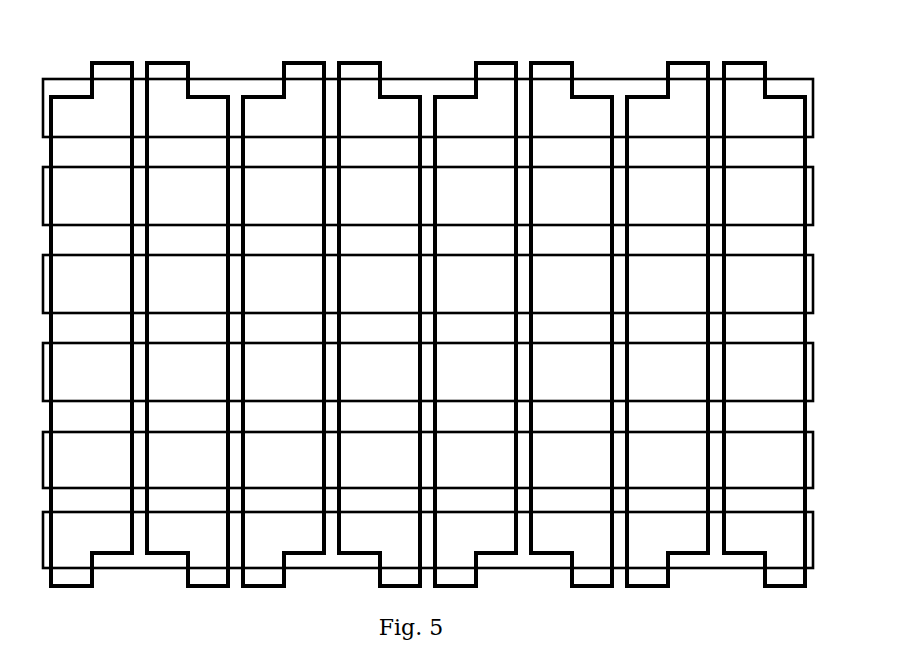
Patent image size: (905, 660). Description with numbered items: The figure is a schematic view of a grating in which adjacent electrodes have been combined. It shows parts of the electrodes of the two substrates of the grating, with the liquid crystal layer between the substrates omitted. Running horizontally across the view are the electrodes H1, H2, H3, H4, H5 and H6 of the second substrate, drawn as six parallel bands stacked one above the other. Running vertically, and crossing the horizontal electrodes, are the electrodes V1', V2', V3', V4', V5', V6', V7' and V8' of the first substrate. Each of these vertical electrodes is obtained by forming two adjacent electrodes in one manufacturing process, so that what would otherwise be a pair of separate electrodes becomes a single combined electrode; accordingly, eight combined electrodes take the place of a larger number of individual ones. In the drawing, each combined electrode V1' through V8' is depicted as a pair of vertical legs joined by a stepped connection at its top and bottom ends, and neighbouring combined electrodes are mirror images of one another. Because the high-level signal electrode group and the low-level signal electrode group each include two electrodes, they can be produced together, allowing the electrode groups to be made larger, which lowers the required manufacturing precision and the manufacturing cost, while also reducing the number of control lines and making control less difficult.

The electrode of the second substrate H1 is at (447, 108).
The electrode of the second substrate H2 is at (447, 196).
The electrode of the second substrate H3 is at (447, 284).
The electrode of the second substrate H4 is at (447, 372).
The electrode of the second substrate H5 is at (447, 460).
The electrode of the second substrate H6 is at (447, 540).
The combined electrode V1' is at (91, 302).
The combined electrode V2' is at (187, 302).
The combined electrode V3' is at (283, 302).
The combined electrode V4' is at (379, 302).
The combined electrode V5' is at (475, 302).
The combined electrode V6' is at (571, 302).
The combined electrode V7' is at (667, 302).
The combined electrode V8' is at (764, 302).